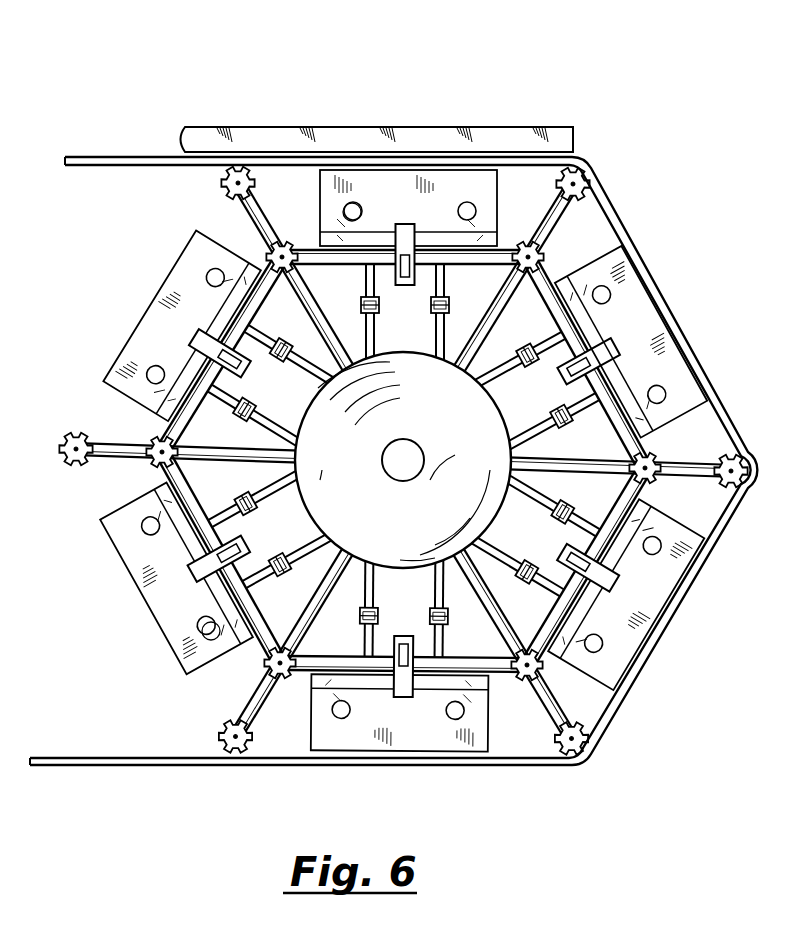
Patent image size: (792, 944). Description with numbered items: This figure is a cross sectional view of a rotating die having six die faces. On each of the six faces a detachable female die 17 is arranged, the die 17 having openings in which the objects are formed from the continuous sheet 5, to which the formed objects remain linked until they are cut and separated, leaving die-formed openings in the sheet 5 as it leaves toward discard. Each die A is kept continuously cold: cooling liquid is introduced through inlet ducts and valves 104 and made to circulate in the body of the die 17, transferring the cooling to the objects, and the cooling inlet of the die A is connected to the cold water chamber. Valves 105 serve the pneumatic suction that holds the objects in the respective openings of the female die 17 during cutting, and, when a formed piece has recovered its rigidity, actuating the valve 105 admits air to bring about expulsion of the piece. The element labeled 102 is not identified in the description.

The continuous sheet 5 is at (650, 647).
The female die 17 is at (637, 307).
The support bar 102 is at (485, 135).
The valve 104 is at (297, 305).
The valve 105 is at (547, 265).
The die A is at (352, 203).